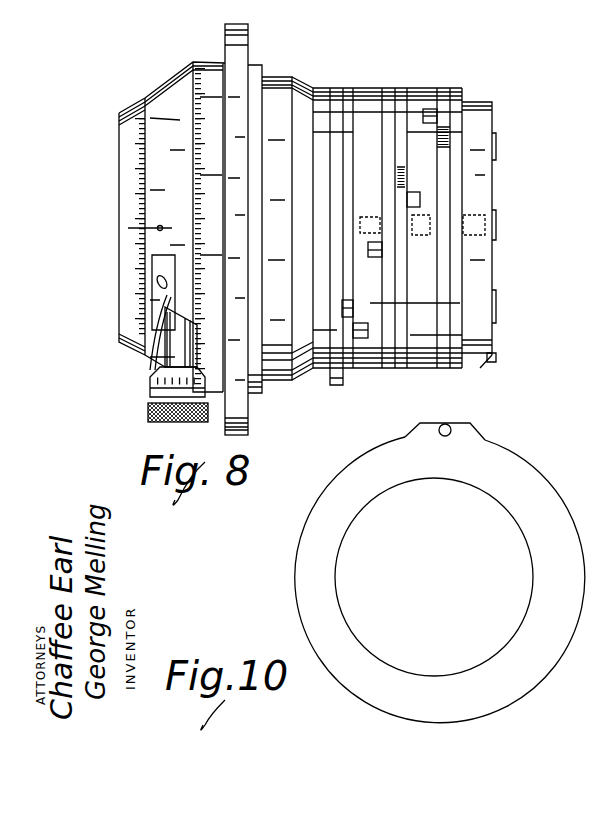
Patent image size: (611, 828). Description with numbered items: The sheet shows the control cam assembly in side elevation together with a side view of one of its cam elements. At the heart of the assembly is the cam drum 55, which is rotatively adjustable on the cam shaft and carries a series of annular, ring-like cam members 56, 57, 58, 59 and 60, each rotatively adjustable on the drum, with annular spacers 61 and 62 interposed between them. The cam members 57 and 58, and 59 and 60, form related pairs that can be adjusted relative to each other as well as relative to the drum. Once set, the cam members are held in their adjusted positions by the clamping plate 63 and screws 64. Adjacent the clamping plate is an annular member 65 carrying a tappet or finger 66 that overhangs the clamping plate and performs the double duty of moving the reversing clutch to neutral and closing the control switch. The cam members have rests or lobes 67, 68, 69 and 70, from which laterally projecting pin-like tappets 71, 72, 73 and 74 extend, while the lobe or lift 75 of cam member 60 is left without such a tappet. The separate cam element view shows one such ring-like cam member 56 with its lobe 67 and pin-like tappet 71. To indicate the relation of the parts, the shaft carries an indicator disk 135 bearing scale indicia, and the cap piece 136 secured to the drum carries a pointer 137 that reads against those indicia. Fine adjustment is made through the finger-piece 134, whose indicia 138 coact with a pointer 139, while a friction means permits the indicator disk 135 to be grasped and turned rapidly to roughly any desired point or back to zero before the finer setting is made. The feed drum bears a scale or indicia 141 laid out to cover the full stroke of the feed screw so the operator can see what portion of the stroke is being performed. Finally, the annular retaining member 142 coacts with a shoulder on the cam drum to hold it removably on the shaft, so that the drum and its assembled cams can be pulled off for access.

In FIG. 8, the cam drum 55 is at (280, 368).
In FIG. 8, the cam member 56 is at (443, 105).
In FIG. 10, the cam member 56 is at (523, 480).
In FIG. 8, the cam member 57 is at (401, 92).
In FIG. 8, the cam member 58 is at (389, 92).
In FIG. 8, the cam member 59 is at (349, 92).
In FIG. 8, the cam member 60 is at (333, 92).
In FIG. 8, the annular spacer 61 is at (416, 92).
In FIG. 8, the annular spacer 62 is at (368, 93).
In FIG. 8, the clamping plate 63 is at (480, 190).
In FIG. 8, the screws 64 is at (496, 148).
In FIG. 8, the annular member 65 is at (452, 356).
In FIG. 8, the tappet or finger 66 is at (486, 360).
In FIG. 8, the lobe 67 is at (443, 104).
In FIG. 10, the lobe 67 is at (470, 430).
In FIG. 8, the lobe 68 is at (405, 186).
In FIG. 8, the lobe 69 is at (381, 232).
In FIG. 8, the lobe 70 is at (350, 318).
In FIG. 8, the pin-like tappet 71 is at (430, 118).
In FIG. 10, the pin-like tappet 71 is at (447, 437).
In FIG. 8, the pin-like tappet 72 is at (422, 231).
In FIG. 8, the pin-like tappet 73 is at (385, 262).
In FIG. 8, the pin-like tappet 74 is at (368, 325).
In FIG. 8, the lobe or lift 75 is at (338, 386).
In FIG. 8, the finger-piece 134 is at (172, 422).
In FIG. 8, the indicator disk 135 is at (130, 255).
In FIG. 8, the cap piece 136 is at (145, 143).
In FIG. 8, the pointer 137 is at (160, 225).
In FIG. 8, the indicia 138 is at (160, 387).
In FIG. 8, the pointer 139 is at (150, 370).
In FIG. 8, the scale or indicia 141 is at (205, 87).
In FIG. 8, the annular retaining member 142 is at (235, 62).